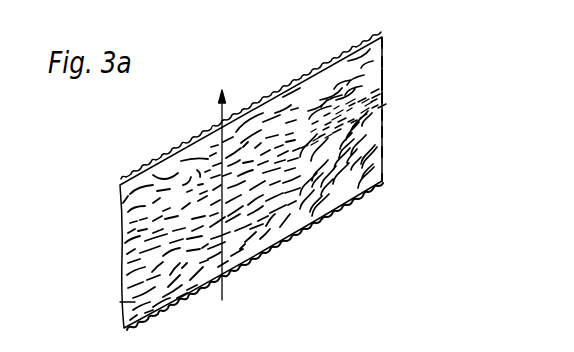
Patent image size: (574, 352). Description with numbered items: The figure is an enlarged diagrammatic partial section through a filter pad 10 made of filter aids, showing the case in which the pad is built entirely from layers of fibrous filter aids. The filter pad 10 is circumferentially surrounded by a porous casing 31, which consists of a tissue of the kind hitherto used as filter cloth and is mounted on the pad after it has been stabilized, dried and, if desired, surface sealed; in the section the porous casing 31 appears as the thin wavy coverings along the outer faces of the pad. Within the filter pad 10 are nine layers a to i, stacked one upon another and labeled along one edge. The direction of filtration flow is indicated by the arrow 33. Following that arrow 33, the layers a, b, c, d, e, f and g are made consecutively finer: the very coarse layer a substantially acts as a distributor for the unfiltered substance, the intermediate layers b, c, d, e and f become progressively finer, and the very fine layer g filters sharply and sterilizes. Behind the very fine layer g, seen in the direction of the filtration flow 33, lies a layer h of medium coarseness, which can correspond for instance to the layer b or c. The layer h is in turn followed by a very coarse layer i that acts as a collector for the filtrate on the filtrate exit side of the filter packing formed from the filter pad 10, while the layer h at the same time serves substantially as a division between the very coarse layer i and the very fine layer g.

The filter pad 10 is at (118, 185).
The porous casing 31 is at (305, 74).
The arrow indicating direction of filtration flow 33 is at (218, 113).
The very coarse layer a is at (384, 179).
The layer b is at (384, 152).
The layer c is at (384, 132).
The layer d is at (384, 115).
The layer e is at (384, 98).
The layer f is at (384, 85).
The very fine layer g is at (384, 75).
The layer of medium coarseness h is at (384, 62).
The very coarse layer i is at (384, 43).